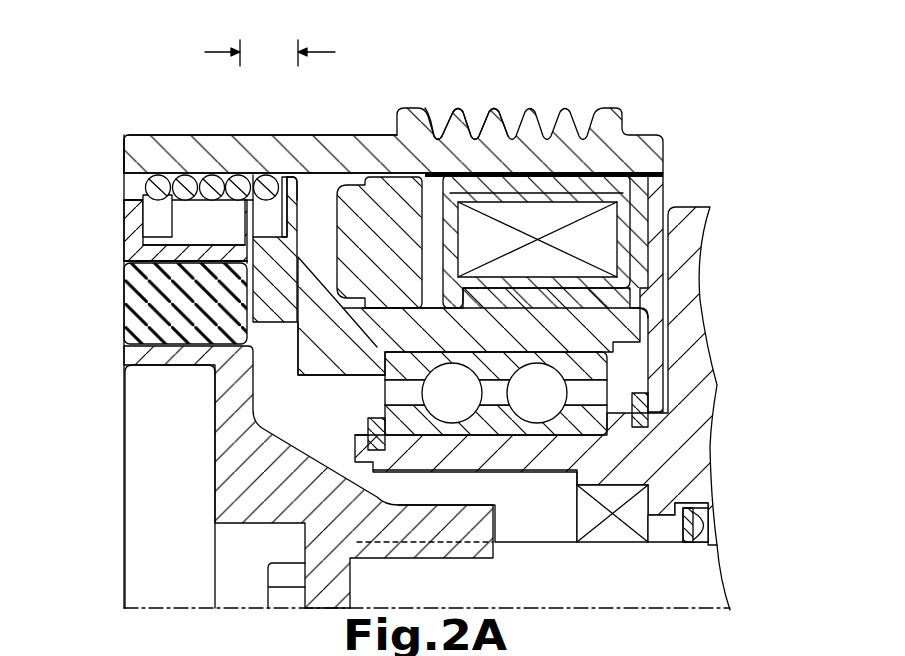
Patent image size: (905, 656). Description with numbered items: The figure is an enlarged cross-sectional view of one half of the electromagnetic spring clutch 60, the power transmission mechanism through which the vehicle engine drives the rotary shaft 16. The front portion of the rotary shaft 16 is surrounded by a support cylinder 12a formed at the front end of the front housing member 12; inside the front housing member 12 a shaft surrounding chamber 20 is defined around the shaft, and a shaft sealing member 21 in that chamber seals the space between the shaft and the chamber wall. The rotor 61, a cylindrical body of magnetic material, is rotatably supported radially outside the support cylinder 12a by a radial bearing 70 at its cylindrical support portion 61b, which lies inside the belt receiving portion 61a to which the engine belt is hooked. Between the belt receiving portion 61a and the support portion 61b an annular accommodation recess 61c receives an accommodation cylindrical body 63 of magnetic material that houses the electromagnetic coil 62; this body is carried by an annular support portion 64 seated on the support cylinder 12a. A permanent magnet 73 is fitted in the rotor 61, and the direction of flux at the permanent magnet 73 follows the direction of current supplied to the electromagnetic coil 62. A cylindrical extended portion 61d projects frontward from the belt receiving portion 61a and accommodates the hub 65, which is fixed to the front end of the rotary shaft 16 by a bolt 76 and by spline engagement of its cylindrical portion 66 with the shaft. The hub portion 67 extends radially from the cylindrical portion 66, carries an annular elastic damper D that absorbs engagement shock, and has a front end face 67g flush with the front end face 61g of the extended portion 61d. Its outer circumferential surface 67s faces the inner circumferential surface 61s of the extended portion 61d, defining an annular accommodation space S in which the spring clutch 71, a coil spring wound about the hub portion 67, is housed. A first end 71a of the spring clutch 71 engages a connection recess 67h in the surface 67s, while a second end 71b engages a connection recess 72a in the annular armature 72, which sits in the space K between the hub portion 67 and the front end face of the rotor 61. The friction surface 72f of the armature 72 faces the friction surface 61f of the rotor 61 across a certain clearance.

The front housing member 12 is at (703, 205).
The support cylinder 12a is at (367, 434).
The rotary shaft 16 is at (716, 573).
The shaft surrounding chamber 20 is at (660, 545).
The shaft sealing member 21 is at (607, 545).
The electromagnetic spring clutch 60 is at (108, 439).
The rotor 61 is at (682, 112).
The belt receiving portion 61a is at (495, 110).
The cylindrical support portion 61b is at (630, 318).
The annular accommodation recess 61c is at (440, 170).
The extended portion 61d is at (137, 140).
The friction surface of the rotor 61f is at (297, 345).
The front end face of the extended portion 61g is at (124, 151).
The inner circumferential surface of the extended portion 61s is at (197, 172).
The electromagnetic coil 62 is at (553, 225).
The accommodation cylindrical body 63 is at (662, 188).
The annular support portion 64 is at (663, 388).
The hub 65 is at (125, 522).
The cylindrical portion 66 is at (473, 496).
The hub portion 67 is at (125, 231).
The front end face of the hub portion 67g is at (124, 240).
The connection recess 67h is at (124, 263).
The outer circumferential surface of the hub portion 67s is at (124, 196).
The radial bearing 70 is at (435, 407).
The spring clutch 71 is at (236, 175).
The first end of the spring clutch 71a is at (158, 213).
The second end of the spring clutch 71b is at (272, 210).
The annular armature 72 is at (273, 292).
The connection recess of the armature 72a is at (300, 185).
The friction surface of the armature 72f is at (298, 285).
The permanent magnet 73 is at (366, 190).
The bolt 76 is at (282, 562).
The damper D is at (124, 332).
The space K is at (276, 46).
The annular accommodation space S is at (126, 182).